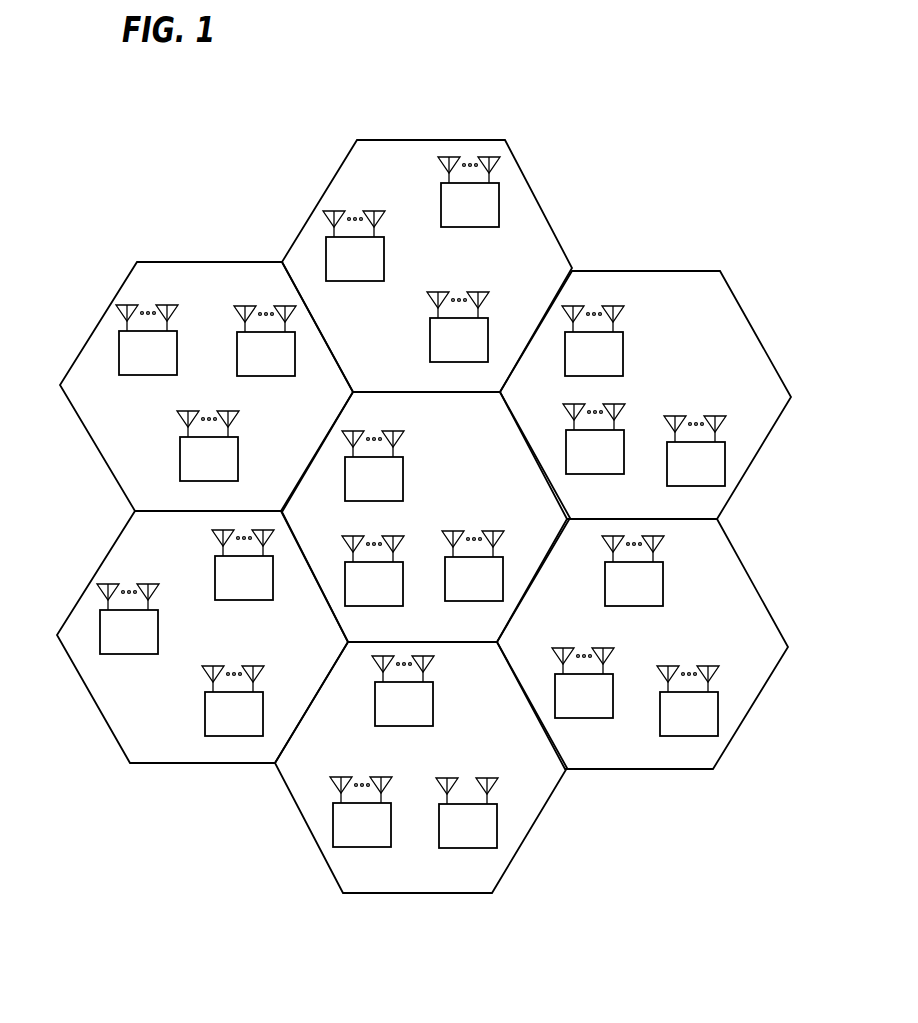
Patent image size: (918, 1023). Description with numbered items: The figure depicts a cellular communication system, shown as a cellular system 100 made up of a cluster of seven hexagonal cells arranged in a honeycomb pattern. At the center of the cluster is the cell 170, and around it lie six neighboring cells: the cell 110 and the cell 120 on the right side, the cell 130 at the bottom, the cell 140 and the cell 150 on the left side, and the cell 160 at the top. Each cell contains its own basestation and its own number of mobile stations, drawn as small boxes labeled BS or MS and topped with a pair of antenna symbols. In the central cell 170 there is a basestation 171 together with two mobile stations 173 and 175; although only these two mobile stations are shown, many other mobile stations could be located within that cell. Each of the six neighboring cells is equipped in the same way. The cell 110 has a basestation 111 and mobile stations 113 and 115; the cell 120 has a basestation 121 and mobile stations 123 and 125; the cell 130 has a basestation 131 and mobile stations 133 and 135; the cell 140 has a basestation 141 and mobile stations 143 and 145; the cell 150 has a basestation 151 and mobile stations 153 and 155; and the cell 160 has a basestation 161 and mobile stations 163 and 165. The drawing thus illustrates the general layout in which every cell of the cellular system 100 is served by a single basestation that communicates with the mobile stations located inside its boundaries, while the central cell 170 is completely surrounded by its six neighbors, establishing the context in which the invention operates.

The cellular system 100 is at (248, 130).
The cell 110 is at (747, 332).
The cell 120 is at (740, 583).
The cell 130 is at (412, 885).
The cell 140 is at (108, 551).
The cell 150 is at (197, 262).
The cell 160 is at (420, 140).
The cell 170 is at (518, 486).
The basestation 111 is at (620, 340).
The mobile station 113 is at (595, 476).
The mobile station 115 is at (725, 443).
The basestation 121 is at (605, 580).
The mobile station 123 is at (578, 718).
The mobile station 125 is at (720, 696).
The basestation 131 is at (433, 708).
The mobile station 133 is at (360, 848).
The mobile station 135 is at (497, 818).
The basestation 141 is at (215, 570).
The mobile station 143 is at (159, 630).
The mobile station 145 is at (205, 710).
The basestation 151 is at (180, 455).
The mobile station 153 is at (272, 377).
The mobile station 155 is at (128, 375).
The basestation 161 is at (430, 338).
The mobile station 163 is at (385, 260).
The mobile station 165 is at (441, 193).
The basestation 171 is at (403, 460).
The mobile station 173 is at (503, 563).
The mobile station 175 is at (403, 590).